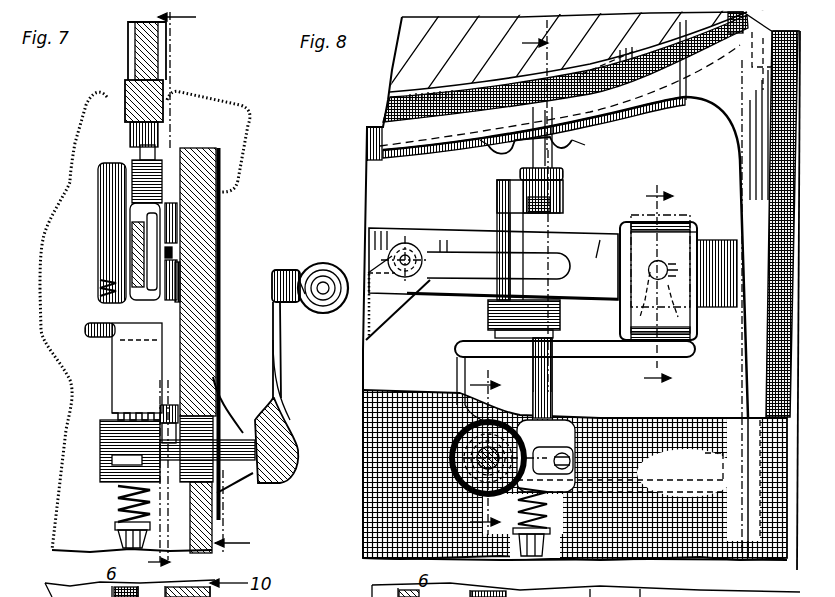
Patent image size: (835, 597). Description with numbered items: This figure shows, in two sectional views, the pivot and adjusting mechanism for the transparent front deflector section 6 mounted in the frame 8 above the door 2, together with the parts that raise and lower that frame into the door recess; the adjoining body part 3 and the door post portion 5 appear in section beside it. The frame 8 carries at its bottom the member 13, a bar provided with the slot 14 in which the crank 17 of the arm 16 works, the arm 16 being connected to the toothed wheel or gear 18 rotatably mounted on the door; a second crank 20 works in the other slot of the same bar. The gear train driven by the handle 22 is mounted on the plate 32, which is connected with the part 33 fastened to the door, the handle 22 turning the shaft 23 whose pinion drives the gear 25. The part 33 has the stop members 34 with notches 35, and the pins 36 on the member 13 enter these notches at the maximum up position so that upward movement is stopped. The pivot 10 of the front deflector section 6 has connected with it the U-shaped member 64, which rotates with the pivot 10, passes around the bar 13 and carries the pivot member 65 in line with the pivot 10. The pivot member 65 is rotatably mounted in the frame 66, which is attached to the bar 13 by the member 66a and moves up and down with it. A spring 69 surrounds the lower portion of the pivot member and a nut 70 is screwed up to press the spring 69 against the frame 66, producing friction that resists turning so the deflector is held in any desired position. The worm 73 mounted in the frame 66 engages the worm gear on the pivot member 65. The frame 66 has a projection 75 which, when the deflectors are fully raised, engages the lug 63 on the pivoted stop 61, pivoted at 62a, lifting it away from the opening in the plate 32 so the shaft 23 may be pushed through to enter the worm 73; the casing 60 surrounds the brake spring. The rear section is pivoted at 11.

In FIG. 7, the door 2 is at (68, 393).
In FIG. 8, the door 2 is at (362, 496).
In FIG. 8, the band 3 is at (420, 135).
In FIG. 8, the frame 5 is at (798, 33).
In FIG. 7, the front deflector section 6 is at (136, 47).
In FIG. 8, the front deflector section 6 is at (575, 50).
In FIG. 7, the frame 8 is at (105, 130).
In FIG. 8, the frame 8 is at (697, 596).
In FIG. 7, the pivot 10 is at (158, 138).
In FIG. 8, the pivot 10 is at (565, 153).
In FIG. 8, the pivot 11 is at (530, 575).
In FIG. 7, the member 13 is at (132, 244).
In FIG. 8, the member 13 is at (591, 240).
In FIG. 7, the slot 14 is at (148, 261).
In FIG. 8, the slot 14 is at (462, 258).
In FIG. 7, the arm 16 is at (168, 395).
In FIG. 8, the arm 16 is at (388, 300).
In FIG. 8, the crank 17 is at (406, 248).
In FIG. 8, the toothed wheel or gear 18 is at (668, 191).
In FIG. 8, the crank 20 is at (512, 379).
In FIG. 7, the handle 22 is at (326, 271).
In FIG. 7, the shaft 23 is at (237, 452).
In FIG. 8, the shaft 23 is at (496, 474).
In FIG. 7, the gear 25 is at (183, 553).
In FIG. 7, the plate 32 is at (159, 471).
In FIG. 7, the part 33 is at (204, 213).
In FIG. 7, the stop member 34 is at (176, 226).
In FIG. 8, the stop member 34 is at (692, 222).
In FIG. 7, the notch 35 is at (180, 273).
In FIG. 8, the notch 35 is at (690, 288).
In FIG. 7, the pin 36 is at (172, 256).
In FIG. 8, the pin 36 is at (648, 269).
In FIG. 7, the casing 60 is at (233, 484).
In FIG. 8, the casing 60 is at (493, 418).
In FIG. 7, the stop 61 is at (170, 432).
In FIG. 8, the stop 61 is at (462, 400).
In FIG. 8, the pivot 62a is at (572, 463).
In FIG. 7, the lug 63 is at (160, 418).
In FIG. 7, the U-shaped member 64 is at (108, 277).
In FIG. 8, the U-shaped member 64 is at (497, 203).
In FIG. 8, the pivot member 65 is at (553, 385).
In FIG. 7, the frame 66 is at (150, 374).
In FIG. 8, the frame 66 is at (606, 350).
In FIG. 8, the member 66a is at (697, 233).
In FIG. 7, the spring 69 is at (118, 501).
In FIG. 8, the spring 69 is at (549, 513).
In FIG. 7, the nut 70 is at (118, 528).
In FIG. 8, the nut 70 is at (546, 543).
In FIG. 7, the worm 73 is at (118, 443).
In FIG. 7, the projection 75 is at (176, 436).
In FIG. 8, the projection 75 is at (462, 458).